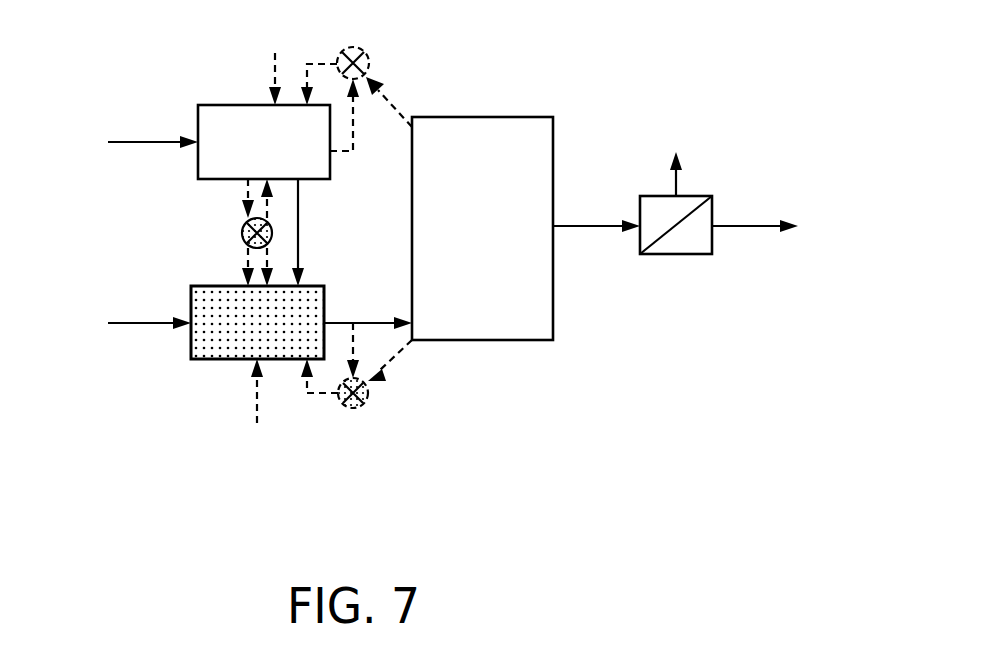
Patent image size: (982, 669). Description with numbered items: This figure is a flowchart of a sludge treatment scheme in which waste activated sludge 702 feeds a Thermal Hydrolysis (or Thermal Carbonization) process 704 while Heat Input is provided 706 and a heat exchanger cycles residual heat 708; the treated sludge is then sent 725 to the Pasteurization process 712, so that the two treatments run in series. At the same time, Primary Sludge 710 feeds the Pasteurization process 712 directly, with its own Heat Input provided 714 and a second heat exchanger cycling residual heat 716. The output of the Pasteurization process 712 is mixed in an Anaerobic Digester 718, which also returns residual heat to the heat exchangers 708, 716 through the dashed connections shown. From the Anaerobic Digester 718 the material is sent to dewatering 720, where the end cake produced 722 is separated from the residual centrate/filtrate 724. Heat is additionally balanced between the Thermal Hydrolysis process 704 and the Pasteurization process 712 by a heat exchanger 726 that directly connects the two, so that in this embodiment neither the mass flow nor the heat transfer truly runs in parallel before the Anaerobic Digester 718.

The waste activated sludge 702 is at (130, 142).
The Thermal Hydrolysis (or Thermal Carbonization) process 704 is at (198, 180).
The heat input 706 is at (275, 72).
The heat exchanger 708 is at (372, 63).
The primary sludge 710 is at (108, 323).
The Pasteurization process 712 is at (199, 352).
The heat input 714 is at (257, 423).
The heat exchanger 716 is at (353, 408).
The Anaerobic Digester 718 is at (492, 335).
The dewatering 720 is at (678, 256).
The end cake 722 is at (676, 152).
The residual centrate/filtrate 724 is at (788, 236).
The sludge sent to Pasteurization 725 is at (298, 208).
The heat exchanger 726 is at (242, 233).